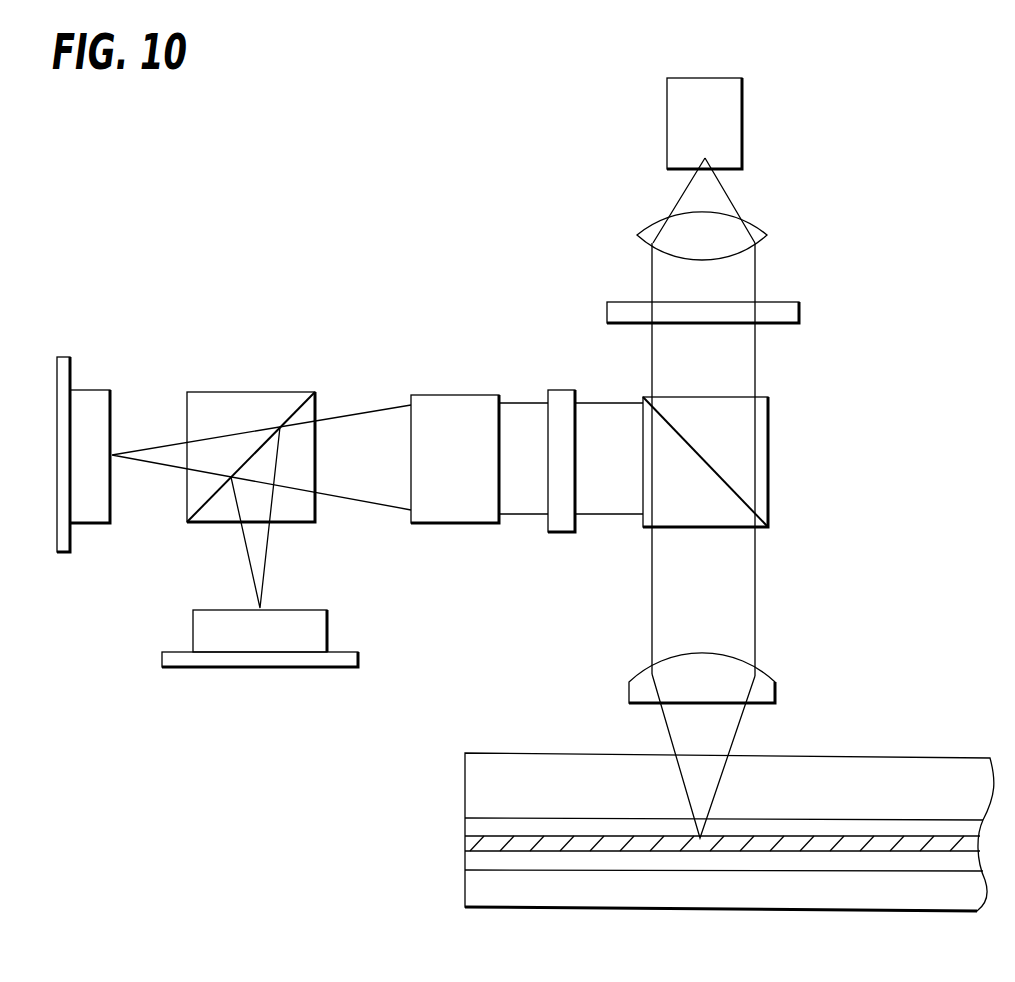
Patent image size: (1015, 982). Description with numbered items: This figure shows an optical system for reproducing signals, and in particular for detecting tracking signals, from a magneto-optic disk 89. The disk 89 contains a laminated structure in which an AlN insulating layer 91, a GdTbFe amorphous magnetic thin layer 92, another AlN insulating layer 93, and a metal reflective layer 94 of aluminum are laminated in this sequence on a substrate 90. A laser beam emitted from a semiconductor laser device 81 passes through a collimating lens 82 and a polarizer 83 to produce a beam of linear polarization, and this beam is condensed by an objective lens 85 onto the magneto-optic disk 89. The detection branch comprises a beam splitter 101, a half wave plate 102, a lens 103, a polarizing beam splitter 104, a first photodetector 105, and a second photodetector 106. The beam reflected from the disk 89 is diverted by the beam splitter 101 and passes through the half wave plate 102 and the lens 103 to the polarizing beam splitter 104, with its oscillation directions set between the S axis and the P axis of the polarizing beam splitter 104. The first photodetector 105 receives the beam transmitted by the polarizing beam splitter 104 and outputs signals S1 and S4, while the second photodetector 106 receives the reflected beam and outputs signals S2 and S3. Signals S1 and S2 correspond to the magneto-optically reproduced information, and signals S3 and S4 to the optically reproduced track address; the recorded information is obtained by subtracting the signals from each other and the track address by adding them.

The semiconductor laser device 81 is at (688, 78).
The collimating lens 82 is at (753, 223).
The polarizer 83 is at (773, 300).
The objective lens 85 is at (767, 673).
The magneto-optic disk 89 is at (698, 811).
The substrate 90 is at (477, 773).
The AlN insulating layer 91 is at (470, 827).
The GdTbFe amorphous magnetic thin layer 92 is at (473, 843).
The AlN insulating layer 93 is at (473, 862).
The metal reflective layer 94 is at (477, 891).
The beam splitter 101 is at (770, 412).
The half wave plate 102 is at (562, 388).
The lens 103 is at (452, 393).
The polarizing beam splitter 104 is at (225, 392).
The first photodetector 105 is at (83, 388).
The second photodetector 106 is at (238, 670).